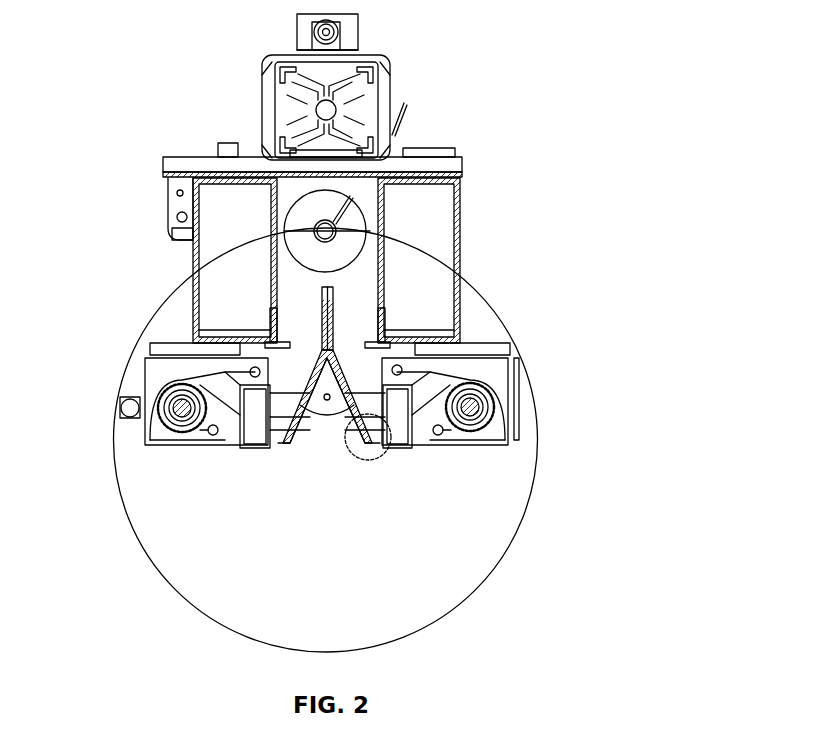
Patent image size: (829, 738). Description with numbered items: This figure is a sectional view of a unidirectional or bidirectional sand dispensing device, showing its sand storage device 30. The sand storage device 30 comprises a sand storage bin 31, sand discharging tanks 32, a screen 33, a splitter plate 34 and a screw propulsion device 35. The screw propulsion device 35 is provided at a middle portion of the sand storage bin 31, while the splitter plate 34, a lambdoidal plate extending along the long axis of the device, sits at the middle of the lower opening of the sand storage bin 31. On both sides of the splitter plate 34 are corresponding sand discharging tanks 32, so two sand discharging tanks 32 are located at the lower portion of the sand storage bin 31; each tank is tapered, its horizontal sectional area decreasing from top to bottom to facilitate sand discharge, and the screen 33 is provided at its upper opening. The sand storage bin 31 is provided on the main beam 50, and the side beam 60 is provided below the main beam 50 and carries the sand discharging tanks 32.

The sand storage device 30 is at (253, 158).
The sand storage bin 31 is at (195, 226).
The sand discharging tank 32 is at (238, 362).
The screen 33 is at (236, 333).
The splitter plate 34 is at (241, 260).
The screw propulsion device 35 is at (231, 164).
The main beam 50 is at (469, 254).
The side beam 60 is at (452, 346).